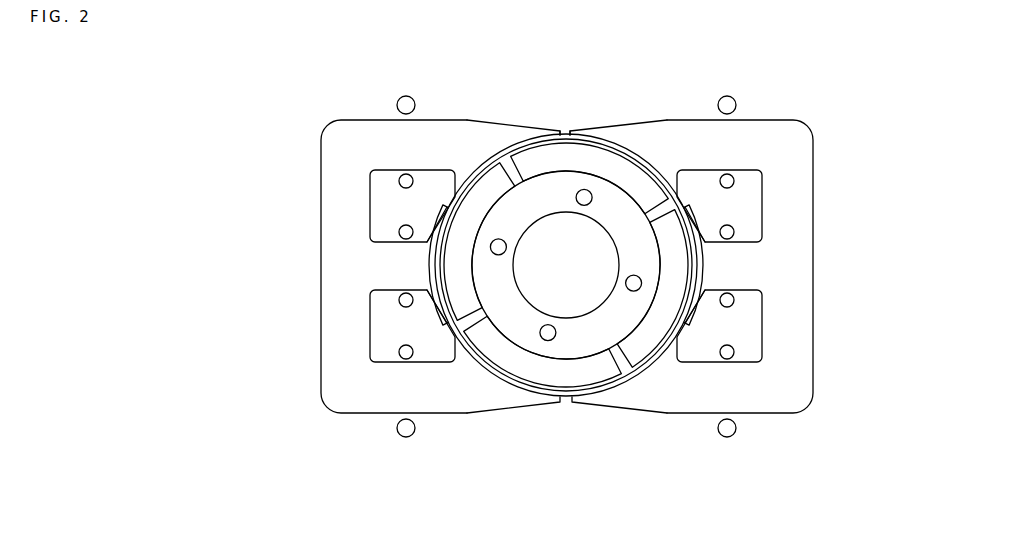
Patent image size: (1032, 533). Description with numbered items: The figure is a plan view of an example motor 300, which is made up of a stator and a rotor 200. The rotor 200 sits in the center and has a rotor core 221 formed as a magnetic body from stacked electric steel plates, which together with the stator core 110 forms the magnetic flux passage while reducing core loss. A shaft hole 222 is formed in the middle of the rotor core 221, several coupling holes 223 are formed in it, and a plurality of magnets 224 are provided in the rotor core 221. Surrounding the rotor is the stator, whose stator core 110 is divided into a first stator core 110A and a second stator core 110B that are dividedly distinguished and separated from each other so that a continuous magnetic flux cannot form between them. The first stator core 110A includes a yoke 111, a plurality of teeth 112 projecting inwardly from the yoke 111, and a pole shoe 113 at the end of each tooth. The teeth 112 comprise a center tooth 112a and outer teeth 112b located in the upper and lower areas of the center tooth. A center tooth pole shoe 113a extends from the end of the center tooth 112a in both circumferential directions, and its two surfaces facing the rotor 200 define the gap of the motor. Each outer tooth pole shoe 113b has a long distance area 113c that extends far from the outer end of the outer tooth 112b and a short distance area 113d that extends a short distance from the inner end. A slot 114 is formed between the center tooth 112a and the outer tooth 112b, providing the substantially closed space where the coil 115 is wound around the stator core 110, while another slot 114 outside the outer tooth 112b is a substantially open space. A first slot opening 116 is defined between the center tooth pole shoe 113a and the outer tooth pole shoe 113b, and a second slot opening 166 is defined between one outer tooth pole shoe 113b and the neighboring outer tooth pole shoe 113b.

The motor 300 is at (826, 144).
The stator core 110 is at (800, 207).
The first stator core 110A is at (797, 356).
The second stator core 110B is at (345, 259).
The yoke 111 is at (815, 262).
The teeth 112 is at (745, 406).
The center tooth 112a is at (757, 277).
The outer tooth 112b is at (737, 377).
The pole shoe 113 is at (588, 399).
The center tooth pole shoe 113a is at (690, 207).
The outer tooth pole shoe 113b is at (672, 352).
The long distance area 113c is at (645, 412).
The short distance area 113d is at (689, 325).
The slot 114 is at (372, 334).
The coil 115 is at (398, 181).
The first slot opening 116 is at (452, 332).
The second slot opening 166 is at (567, 128).
The rotor 200 is at (566, 268).
The rotor core 221 is at (513, 203).
The shaft hole 222 is at (548, 222).
The coupling hole 223 is at (588, 190).
The magnets 224 is at (513, 367).